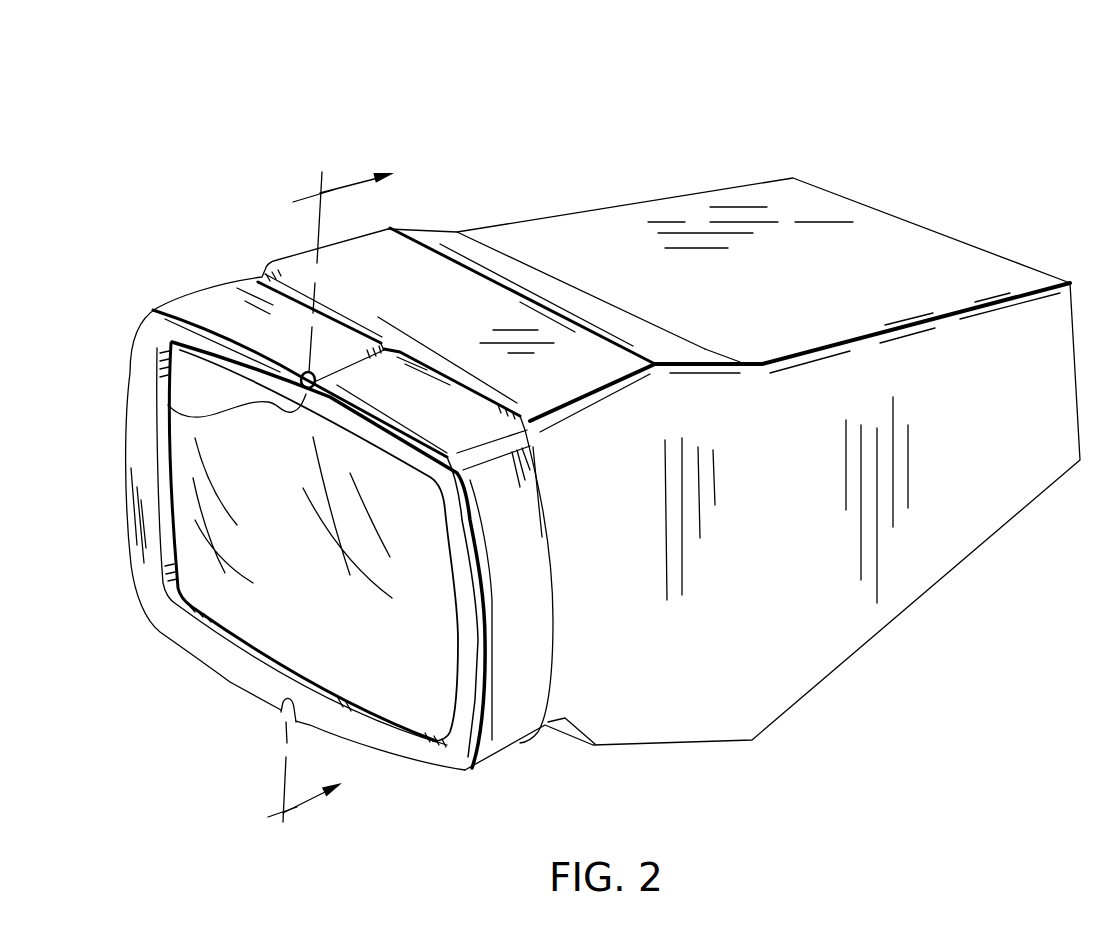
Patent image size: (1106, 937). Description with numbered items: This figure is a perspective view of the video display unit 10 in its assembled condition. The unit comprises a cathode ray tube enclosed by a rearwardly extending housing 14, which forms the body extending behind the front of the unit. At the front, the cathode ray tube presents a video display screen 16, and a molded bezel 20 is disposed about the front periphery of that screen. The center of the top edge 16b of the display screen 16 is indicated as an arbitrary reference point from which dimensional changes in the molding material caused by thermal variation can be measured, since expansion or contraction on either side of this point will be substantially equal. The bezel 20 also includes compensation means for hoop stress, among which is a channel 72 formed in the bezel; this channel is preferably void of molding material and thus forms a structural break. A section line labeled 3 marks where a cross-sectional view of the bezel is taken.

The video display unit 10 is at (226, 84).
The cabinet 14 is at (868, 224).
The display screen 16 is at (188, 552).
The screen face 16b is at (168, 405).
The front bezel 20 is at (490, 752).
The tab 72 is at (278, 721).
The section line 3- 3 is at (340, 489).